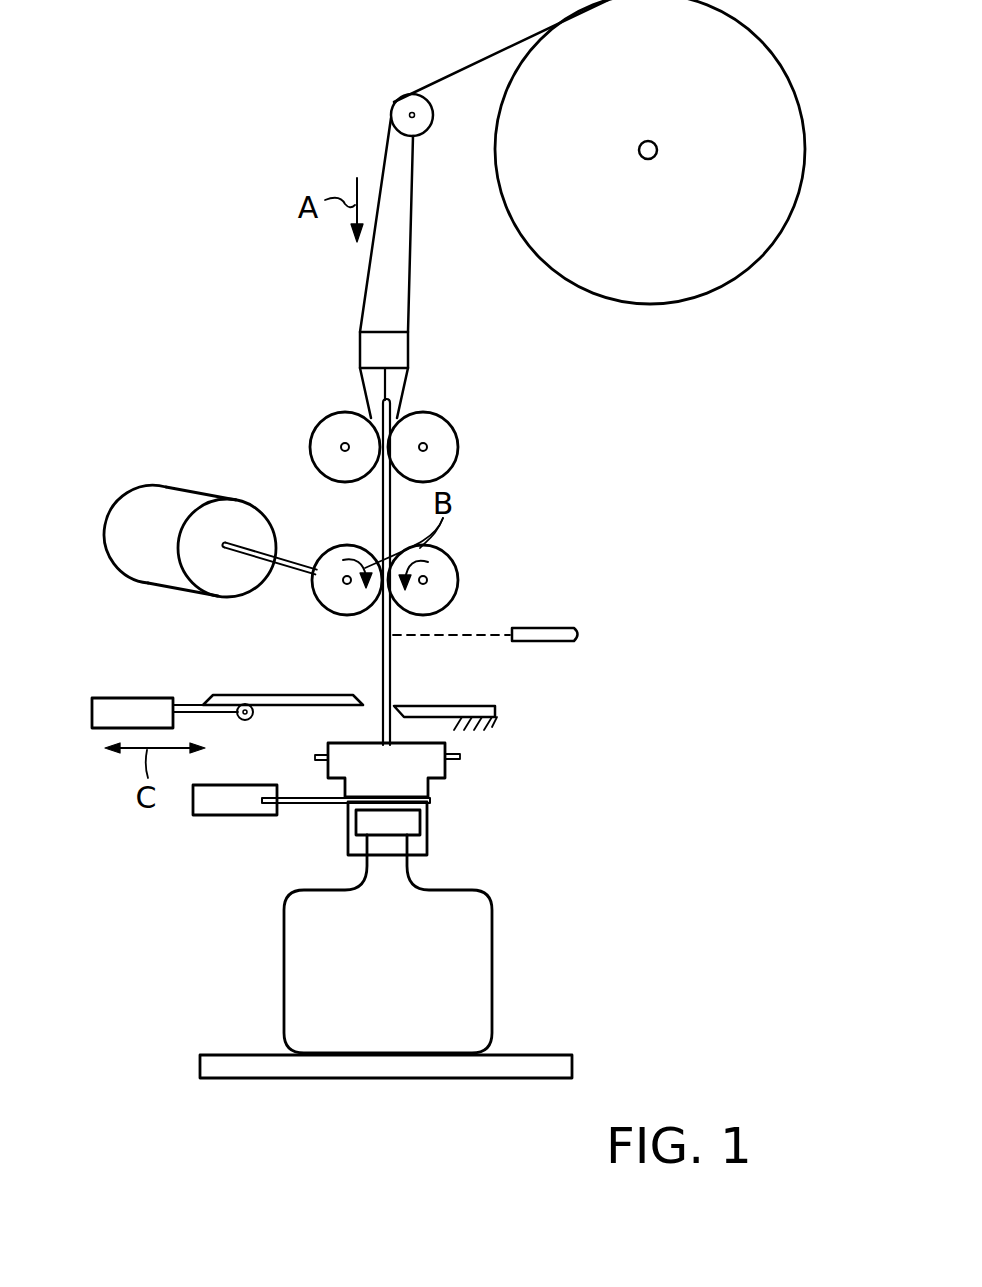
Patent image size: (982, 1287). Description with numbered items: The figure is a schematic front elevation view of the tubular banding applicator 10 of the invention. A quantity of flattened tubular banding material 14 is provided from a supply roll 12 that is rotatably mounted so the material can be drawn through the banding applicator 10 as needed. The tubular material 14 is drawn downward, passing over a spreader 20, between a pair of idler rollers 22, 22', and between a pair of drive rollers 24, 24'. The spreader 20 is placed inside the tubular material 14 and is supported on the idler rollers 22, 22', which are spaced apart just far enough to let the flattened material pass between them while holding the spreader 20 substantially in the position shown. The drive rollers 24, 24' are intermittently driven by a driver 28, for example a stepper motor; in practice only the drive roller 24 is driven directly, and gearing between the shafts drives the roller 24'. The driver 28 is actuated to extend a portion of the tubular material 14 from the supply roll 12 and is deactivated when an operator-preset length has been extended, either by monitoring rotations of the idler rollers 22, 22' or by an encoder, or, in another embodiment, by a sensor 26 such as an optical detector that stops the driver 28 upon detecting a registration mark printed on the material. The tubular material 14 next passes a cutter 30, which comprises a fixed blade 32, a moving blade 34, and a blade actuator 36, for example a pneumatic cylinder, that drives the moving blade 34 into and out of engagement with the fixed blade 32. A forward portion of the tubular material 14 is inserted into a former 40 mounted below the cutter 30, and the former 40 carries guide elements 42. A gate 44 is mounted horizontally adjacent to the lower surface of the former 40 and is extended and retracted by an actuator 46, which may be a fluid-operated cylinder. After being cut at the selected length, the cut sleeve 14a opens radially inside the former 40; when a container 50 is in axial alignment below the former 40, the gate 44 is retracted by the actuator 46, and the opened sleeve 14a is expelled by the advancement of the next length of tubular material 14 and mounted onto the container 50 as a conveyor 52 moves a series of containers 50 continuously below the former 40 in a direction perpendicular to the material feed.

The banding applicator 10 is at (764, 527).
The supply roll 12 is at (728, 255).
The tubular banding material 14 is at (464, 70).
The cut sleeve 14a is at (428, 838).
The spreader 20 is at (388, 378).
The idler roller 22 is at (309, 447).
The idler roller 22' is at (458, 447).
The drive roller 24 is at (309, 600).
The drive roller 24' is at (459, 580).
The sensor 26 is at (583, 634).
The driver 28 is at (137, 547).
The cutter 30 is at (558, 697).
The fixed blade 32 is at (455, 707).
The moving blade 34 is at (327, 695).
The blade actuator 36 is at (92, 712).
The former 40 is at (430, 770).
The guide rods 42 is at (316, 758).
The gate 44 is at (292, 806).
The actuator 46 is at (193, 800).
The container 50 is at (480, 943).
The conveyor 52 is at (549, 1055).